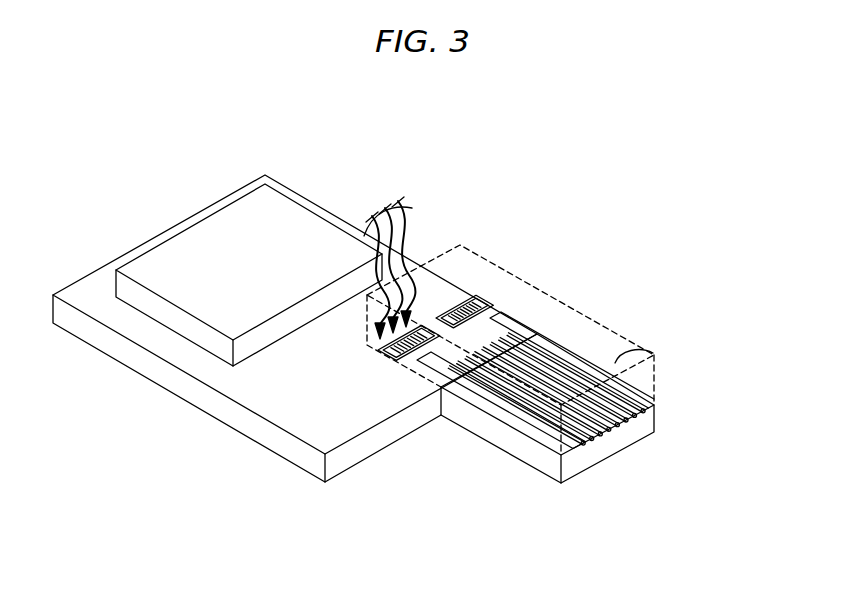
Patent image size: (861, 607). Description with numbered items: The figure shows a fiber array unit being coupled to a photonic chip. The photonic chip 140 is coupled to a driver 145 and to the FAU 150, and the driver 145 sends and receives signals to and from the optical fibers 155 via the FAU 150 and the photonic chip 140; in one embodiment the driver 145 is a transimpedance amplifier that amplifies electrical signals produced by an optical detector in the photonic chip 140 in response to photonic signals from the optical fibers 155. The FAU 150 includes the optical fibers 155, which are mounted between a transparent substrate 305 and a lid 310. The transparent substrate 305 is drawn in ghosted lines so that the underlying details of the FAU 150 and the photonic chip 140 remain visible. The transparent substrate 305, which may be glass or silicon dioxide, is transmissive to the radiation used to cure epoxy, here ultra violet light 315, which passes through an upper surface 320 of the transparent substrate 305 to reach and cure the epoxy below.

The photonic chip 140 is at (296, 449).
The driver 145 is at (222, 226).
The FAU 150 is at (662, 347).
The optical fibers 155 is at (606, 432).
The transparent substrate 305 is at (449, 242).
The lid 310 is at (493, 450).
The ultra violet (UV) light 315 is at (412, 208).
The upper surface 320 is at (653, 353).